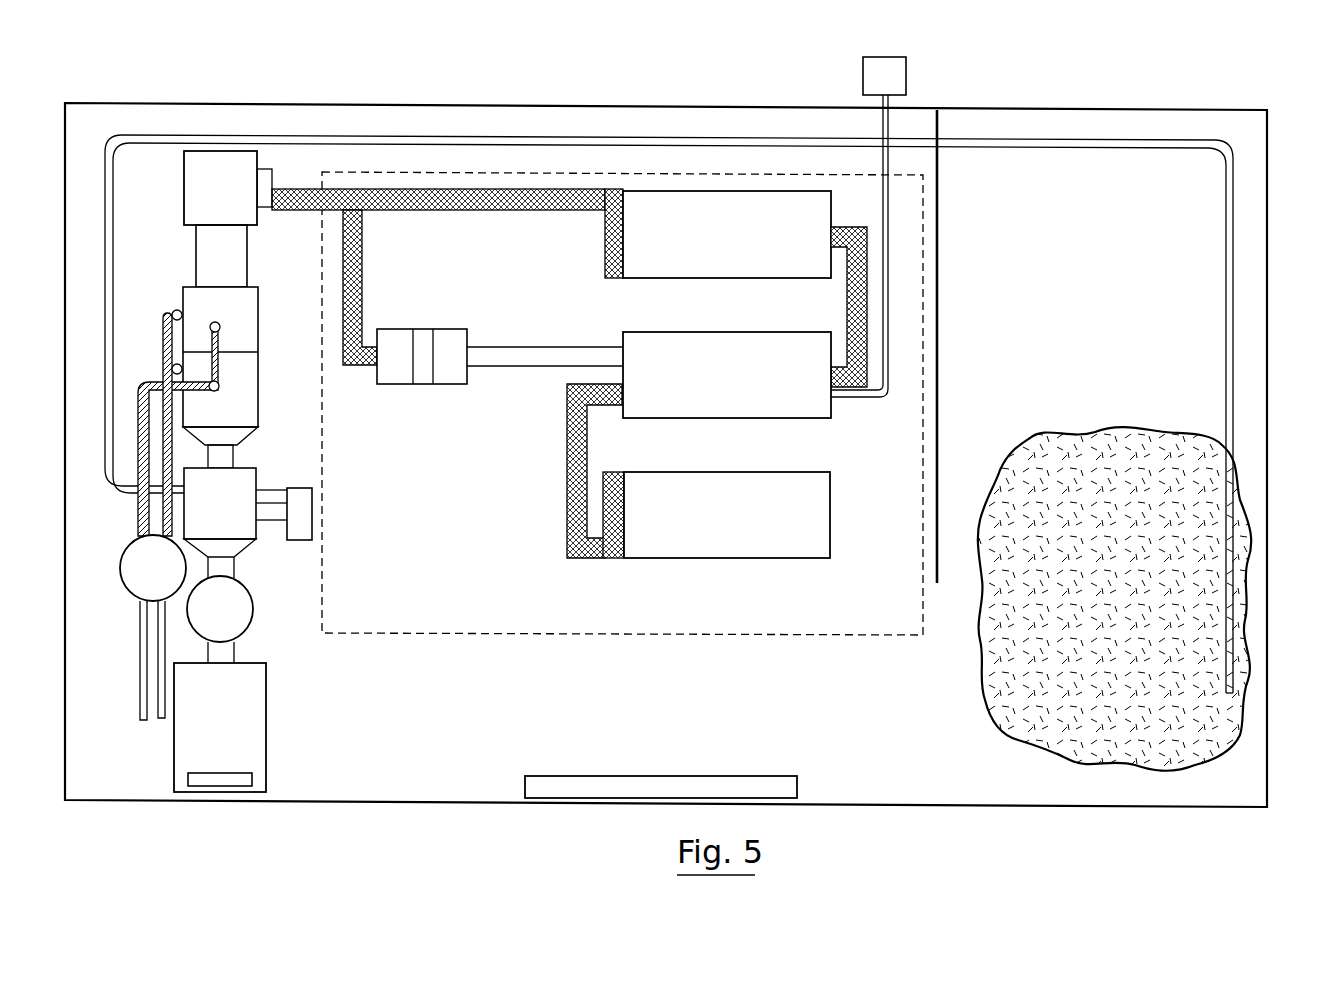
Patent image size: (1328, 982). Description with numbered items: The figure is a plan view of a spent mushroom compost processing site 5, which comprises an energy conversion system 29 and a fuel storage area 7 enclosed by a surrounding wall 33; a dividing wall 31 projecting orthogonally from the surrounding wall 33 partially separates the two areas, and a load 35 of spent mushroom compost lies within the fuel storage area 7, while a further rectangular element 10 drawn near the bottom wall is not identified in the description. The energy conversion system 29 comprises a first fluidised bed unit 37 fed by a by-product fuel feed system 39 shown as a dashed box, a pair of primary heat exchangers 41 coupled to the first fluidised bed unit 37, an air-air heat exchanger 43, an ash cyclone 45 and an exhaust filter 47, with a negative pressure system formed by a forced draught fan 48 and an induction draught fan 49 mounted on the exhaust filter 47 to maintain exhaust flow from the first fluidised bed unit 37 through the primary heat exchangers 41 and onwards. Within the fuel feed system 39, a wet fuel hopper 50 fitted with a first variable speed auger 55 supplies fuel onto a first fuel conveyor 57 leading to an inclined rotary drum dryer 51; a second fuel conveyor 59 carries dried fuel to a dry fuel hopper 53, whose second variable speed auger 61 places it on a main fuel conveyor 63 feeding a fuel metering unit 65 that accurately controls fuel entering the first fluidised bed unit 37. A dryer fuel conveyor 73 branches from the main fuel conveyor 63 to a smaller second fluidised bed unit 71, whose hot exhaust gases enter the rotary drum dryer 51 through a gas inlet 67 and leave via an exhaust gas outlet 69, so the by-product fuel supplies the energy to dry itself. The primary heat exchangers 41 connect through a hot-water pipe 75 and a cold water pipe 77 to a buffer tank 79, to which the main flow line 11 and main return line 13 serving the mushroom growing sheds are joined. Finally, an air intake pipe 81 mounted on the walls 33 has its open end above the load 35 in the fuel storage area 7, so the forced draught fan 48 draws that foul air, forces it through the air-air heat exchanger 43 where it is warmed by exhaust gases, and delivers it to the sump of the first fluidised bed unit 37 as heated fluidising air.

The spent mushroom compost processing site 5 is at (483, 90).
The fuel storage area 7 is at (1101, 374).
The plate 10 is at (647, 775).
The main flow line 11 is at (140, 698).
The main return line 13 is at (158, 718).
The energy conversion system 29 is at (445, 672).
The dividing wall 31 is at (937, 335).
The surrounding wall 33 is at (1267, 242).
The load of spent mushroom compost 35 is at (1025, 693).
The first fluidised bed unit 37 is at (210, 204).
The by-product fuel feed system 39 is at (713, 635).
The primary heat exchangers 41 is at (242, 318).
The air-air heat exchanger 43 is at (210, 519).
The ash cyclone 45 is at (210, 625).
The exhaust filter 47 is at (210, 729).
The forced draught fan 48 is at (296, 528).
The induction draught fan 49 is at (237, 777).
The wet fuel hopper 50 is at (705, 529).
The rotary drum dryer 51 is at (705, 389).
The dry fuel hopper 53 is at (705, 248).
The first variable speed auger 55 is at (608, 553).
The first fuel conveyor 57 is at (575, 493).
The second fuel conveyor 59 is at (848, 377).
The second variable speed auger 61 is at (890, 73).
The main fuel conveyor 63 is at (406, 203).
The fuel metering unit 65 is at (262, 200).
The gas inlet 67 is at (540, 360).
The exhaust gas outlet 69 is at (875, 400).
The second fluidised bed unit 71 is at (445, 377).
The dryer fuel conveyor 73 is at (355, 287).
The hot-water pipe 75 is at (137, 517).
The cold water pipe 77 is at (162, 342).
The buffer tank 79 is at (143, 584).
The air intake pipe 81 is at (1045, 150).